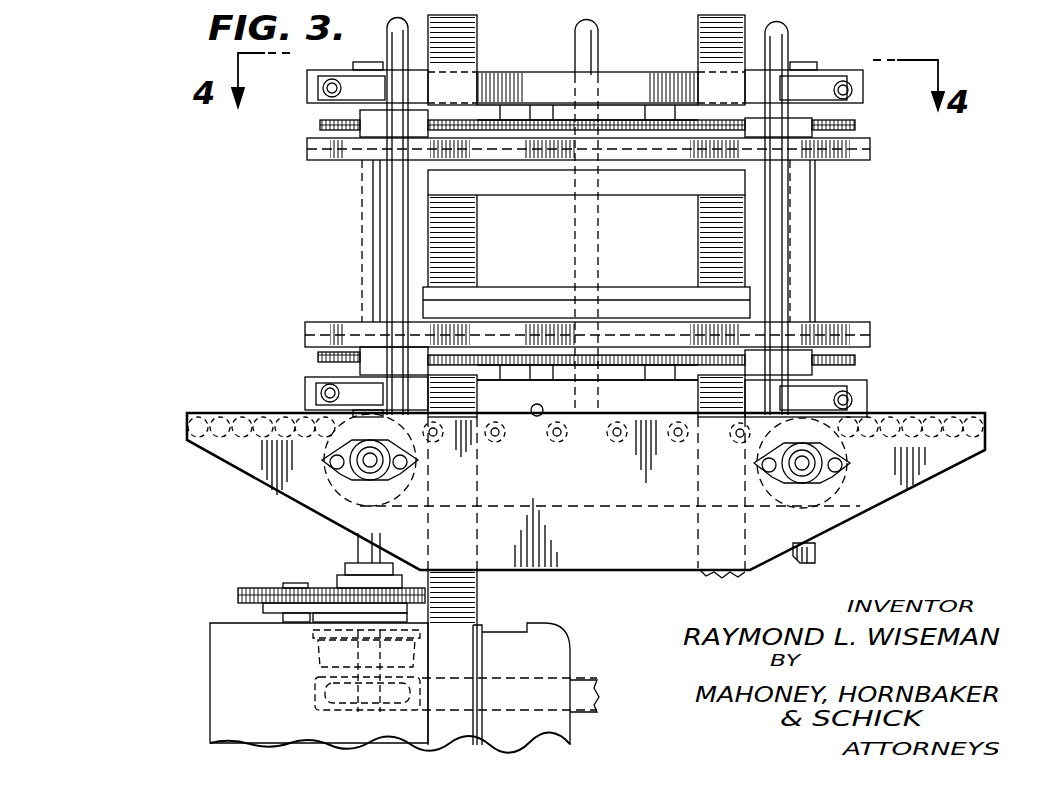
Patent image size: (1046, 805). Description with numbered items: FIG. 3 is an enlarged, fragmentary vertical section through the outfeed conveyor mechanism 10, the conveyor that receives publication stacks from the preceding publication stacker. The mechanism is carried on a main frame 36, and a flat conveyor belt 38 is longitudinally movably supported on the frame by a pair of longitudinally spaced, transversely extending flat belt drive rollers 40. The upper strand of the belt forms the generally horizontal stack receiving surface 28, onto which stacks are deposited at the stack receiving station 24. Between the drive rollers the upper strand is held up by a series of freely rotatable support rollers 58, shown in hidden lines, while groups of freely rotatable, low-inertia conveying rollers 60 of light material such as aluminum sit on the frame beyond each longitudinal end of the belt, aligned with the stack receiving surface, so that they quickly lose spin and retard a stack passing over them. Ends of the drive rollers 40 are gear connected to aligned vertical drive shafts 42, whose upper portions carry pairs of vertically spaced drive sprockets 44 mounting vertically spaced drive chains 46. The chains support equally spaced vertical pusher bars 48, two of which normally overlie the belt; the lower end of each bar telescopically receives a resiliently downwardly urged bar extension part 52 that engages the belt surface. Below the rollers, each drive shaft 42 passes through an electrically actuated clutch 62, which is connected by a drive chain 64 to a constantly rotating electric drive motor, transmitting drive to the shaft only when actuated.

The outfeed conveyor mechanism 10 is at (312, 262).
The stack receiving station 24 is at (530, 55).
The stack receiving surface 28 is at (537, 416).
The main frame 36 is at (270, 473).
The flat conveyor belt 38 is at (650, 510).
The flat belt drive rollers 40 is at (368, 462).
The drive shafts 42 is at (365, 549).
The drive sprockets 44 is at (330, 120).
The drive chains 46 is at (618, 125).
The vertical pusher bars 48 is at (590, 57).
The bar extension part 52 is at (400, 420).
The support rollers 58 is at (495, 444).
The conveying rollers 60 is at (213, 417).
The electrically actuated clutch 62 is at (345, 580).
The drive chains 64 is at (258, 588).